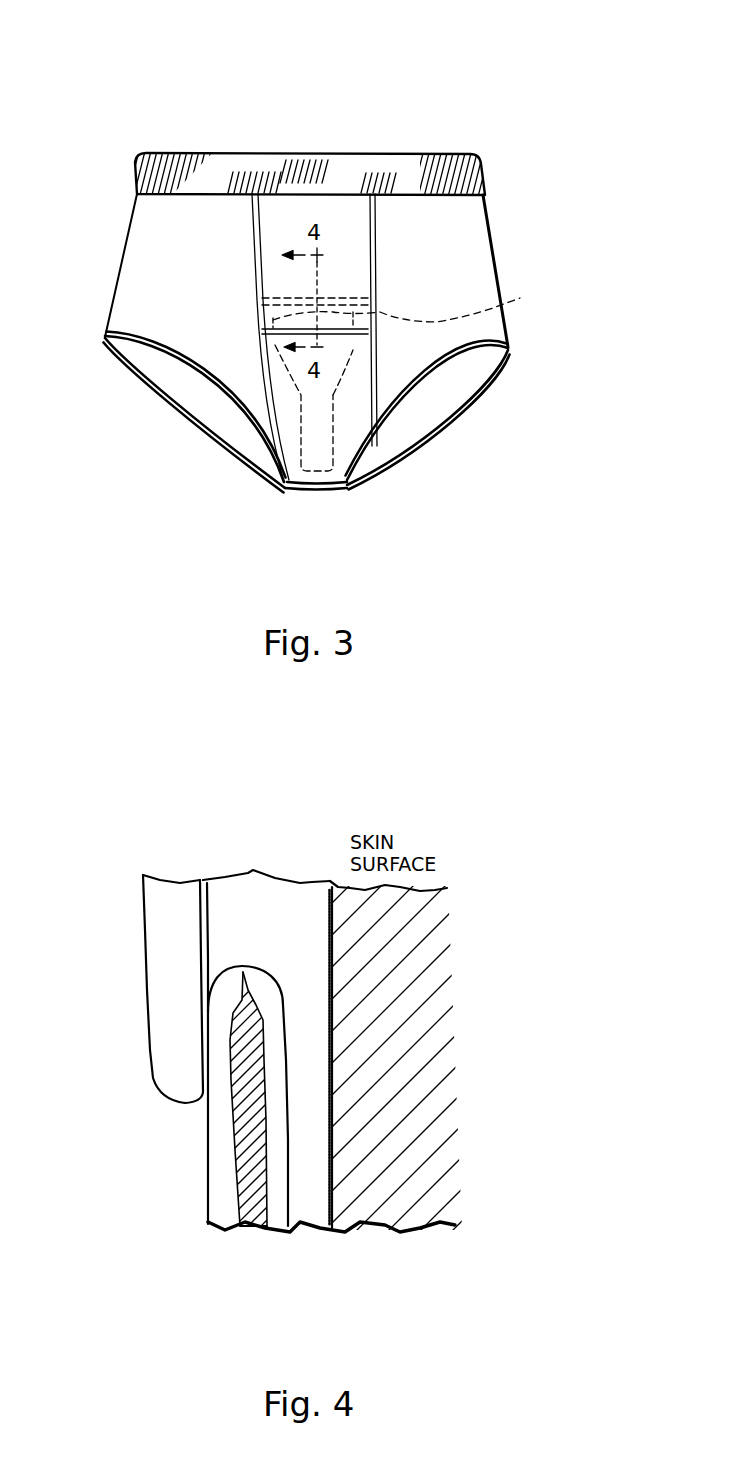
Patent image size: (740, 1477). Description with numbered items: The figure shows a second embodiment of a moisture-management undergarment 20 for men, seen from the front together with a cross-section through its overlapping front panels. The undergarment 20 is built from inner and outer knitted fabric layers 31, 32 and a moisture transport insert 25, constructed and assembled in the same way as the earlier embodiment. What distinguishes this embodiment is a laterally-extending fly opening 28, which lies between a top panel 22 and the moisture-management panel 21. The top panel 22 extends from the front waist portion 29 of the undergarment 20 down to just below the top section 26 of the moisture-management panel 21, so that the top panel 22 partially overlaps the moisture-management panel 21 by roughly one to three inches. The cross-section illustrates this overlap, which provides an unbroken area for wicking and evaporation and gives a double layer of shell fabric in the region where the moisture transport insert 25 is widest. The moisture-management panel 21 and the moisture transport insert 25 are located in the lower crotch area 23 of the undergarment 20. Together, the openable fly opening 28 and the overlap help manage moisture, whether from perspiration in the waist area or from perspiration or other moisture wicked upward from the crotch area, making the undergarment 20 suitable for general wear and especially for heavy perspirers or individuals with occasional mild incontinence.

In FIG. 3, the moisture-management undergarment 20 is at (546, 114).
In FIG. 3, the moisture-management panel 21 is at (286, 395).
In FIG. 4, the moisture-management panel 21 is at (292, 1137).
In FIG. 3, the top panel 22 is at (350, 248).
In FIG. 4, the top panel 22 is at (165, 960).
In FIG. 3, the lower crotch area 23 is at (292, 498).
In FIG. 3, the moisture transport insert 25 is at (338, 370).
In FIG. 4, the moisture transport insert 25 is at (270, 1228).
In FIG. 3, the top section 26 is at (415, 303).
In FIG. 3, the fly opening 28 is at (263, 330).
In FIG. 4, the fly opening 28 is at (198, 1027).
In FIG. 3, the front waist portion 29 is at (270, 203).
In FIG. 4, the inner knitted fabric layer 31 is at (272, 1088).
In FIG. 3, the outer knitted fabric layer 32 is at (350, 421).
In FIG. 4, the outer knitted fabric layer 32 is at (220, 1133).